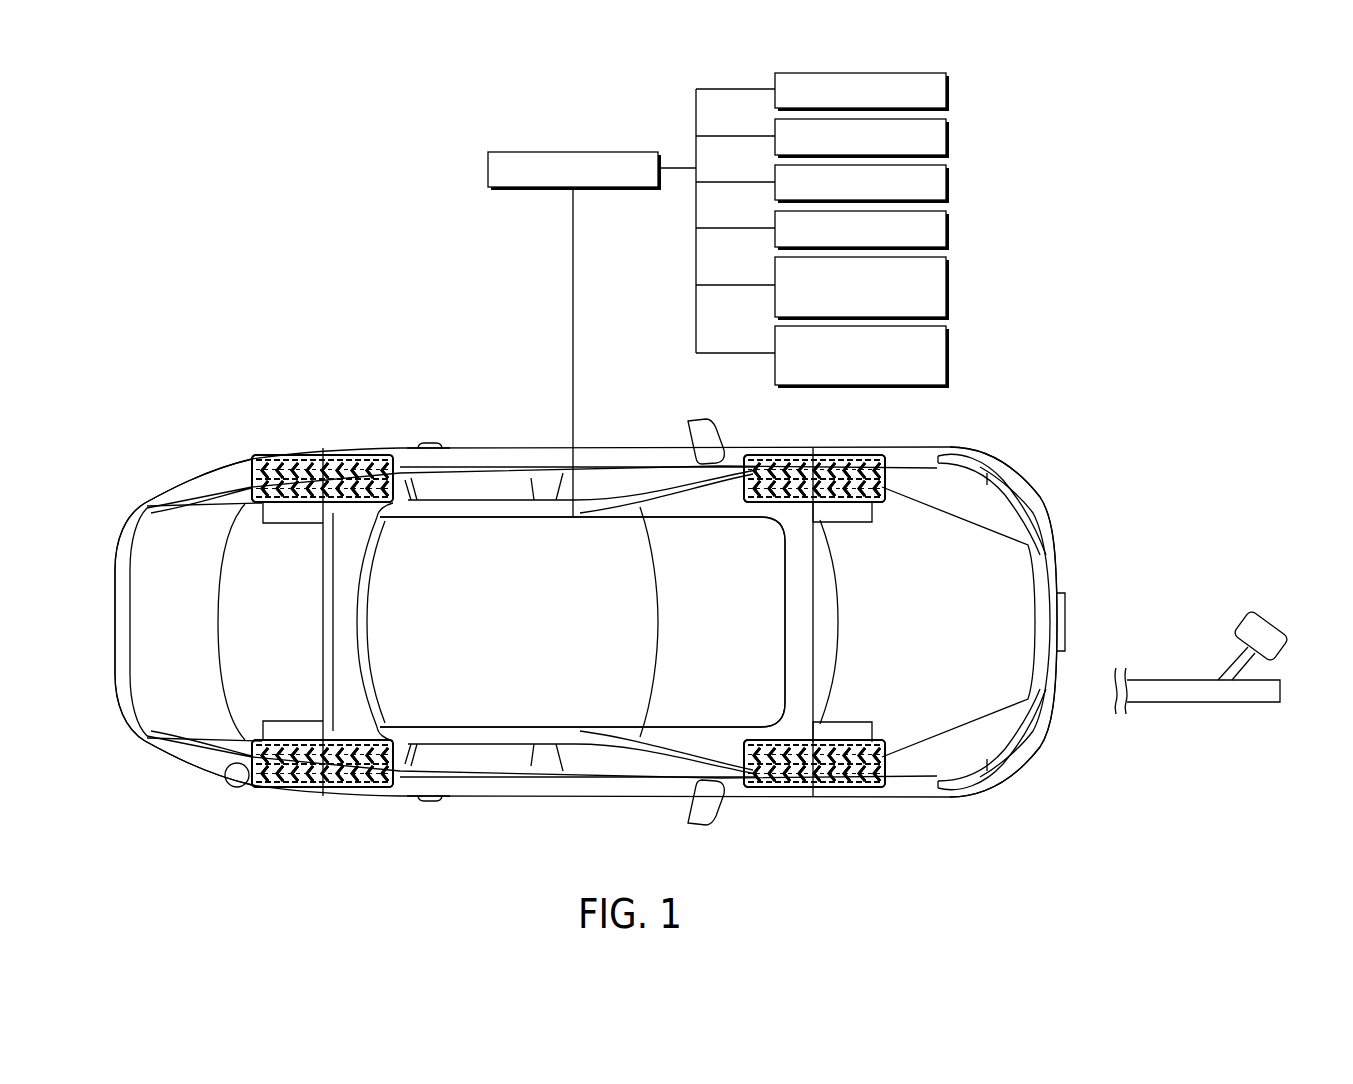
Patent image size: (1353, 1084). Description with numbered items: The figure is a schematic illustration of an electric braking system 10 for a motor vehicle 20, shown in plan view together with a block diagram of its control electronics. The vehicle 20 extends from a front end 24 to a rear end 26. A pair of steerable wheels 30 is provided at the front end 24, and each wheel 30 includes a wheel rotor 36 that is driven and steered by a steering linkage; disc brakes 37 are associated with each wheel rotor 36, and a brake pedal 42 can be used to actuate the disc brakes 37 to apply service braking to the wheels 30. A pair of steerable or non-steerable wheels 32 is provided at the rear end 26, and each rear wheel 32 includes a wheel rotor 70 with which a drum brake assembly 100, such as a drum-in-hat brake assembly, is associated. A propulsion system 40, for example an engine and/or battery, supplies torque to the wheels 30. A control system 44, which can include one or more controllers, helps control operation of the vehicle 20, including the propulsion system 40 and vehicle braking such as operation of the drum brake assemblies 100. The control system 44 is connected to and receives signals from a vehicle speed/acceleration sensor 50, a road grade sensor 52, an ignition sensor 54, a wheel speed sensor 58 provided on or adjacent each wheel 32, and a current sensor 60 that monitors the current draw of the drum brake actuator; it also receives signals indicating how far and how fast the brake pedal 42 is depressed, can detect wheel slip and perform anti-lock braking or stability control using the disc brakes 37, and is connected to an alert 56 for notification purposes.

The electric braking system 10 is at (258, 388).
The motor vehicle 20 is at (537, 822).
The front end 24 is at (1002, 458).
The rear end 26 is at (213, 459).
The steerable wheels 30 is at (850, 453).
The rear wheels 32 is at (279, 463).
The wheel rotor 36 is at (797, 448).
The disc brakes 37 is at (797, 448).
The propulsion system 40 is at (588, 633).
The brake pedal 42 is at (1207, 703).
The control system 44 is at (488, 170).
The vehicle speed/acceleration sensor 50 is at (947, 89).
The road grade sensor 52 is at (947, 136).
The ignition sensor 54 is at (947, 182).
The alert 56 is at (947, 229).
The wheel speed sensor 58 is at (947, 286).
The current sensor 60 is at (947, 354).
The rear wheel rotor 70 is at (345, 457).
The drum brake assembly 100 is at (345, 457).